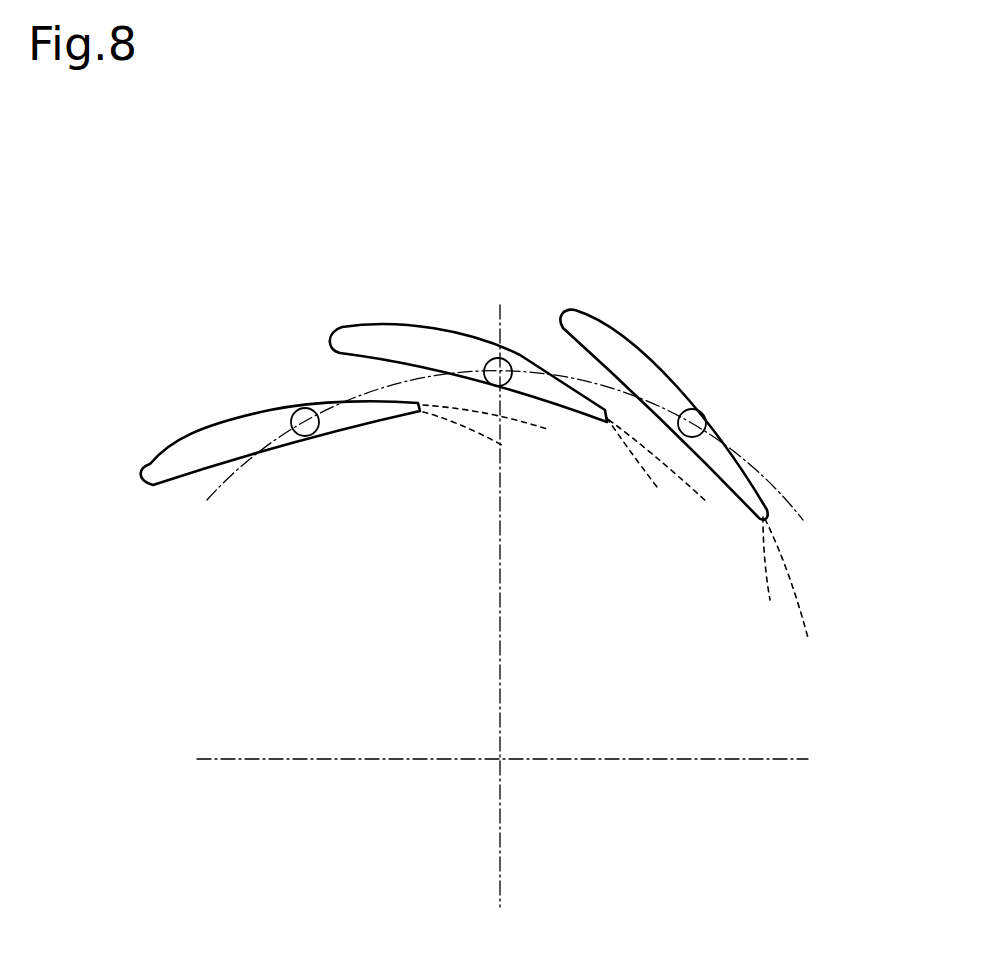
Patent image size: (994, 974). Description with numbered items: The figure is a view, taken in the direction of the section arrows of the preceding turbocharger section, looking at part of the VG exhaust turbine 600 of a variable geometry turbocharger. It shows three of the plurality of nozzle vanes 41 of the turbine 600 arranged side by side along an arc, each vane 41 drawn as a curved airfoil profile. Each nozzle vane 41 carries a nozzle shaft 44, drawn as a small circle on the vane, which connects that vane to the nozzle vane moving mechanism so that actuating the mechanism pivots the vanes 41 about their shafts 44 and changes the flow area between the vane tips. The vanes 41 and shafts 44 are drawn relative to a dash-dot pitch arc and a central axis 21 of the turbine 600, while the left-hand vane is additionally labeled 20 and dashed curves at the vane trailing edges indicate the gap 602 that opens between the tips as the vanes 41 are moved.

The VG exhaust turbine 600 is at (643, 240).
The trailing edge offset 602 is at (475, 418).
The guide vane 20 is at (158, 468).
The nozzle vane 41 is at (365, 343).
The nozzle shaft 44 is at (300, 408).
The rotation axis 21 is at (500, 760).